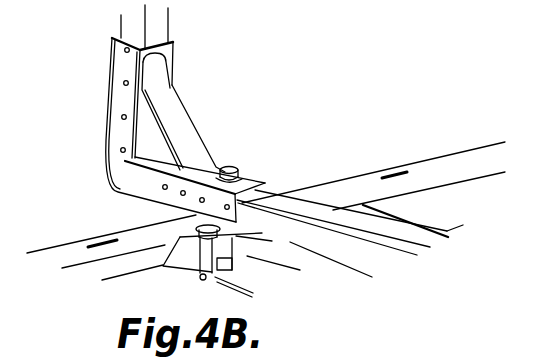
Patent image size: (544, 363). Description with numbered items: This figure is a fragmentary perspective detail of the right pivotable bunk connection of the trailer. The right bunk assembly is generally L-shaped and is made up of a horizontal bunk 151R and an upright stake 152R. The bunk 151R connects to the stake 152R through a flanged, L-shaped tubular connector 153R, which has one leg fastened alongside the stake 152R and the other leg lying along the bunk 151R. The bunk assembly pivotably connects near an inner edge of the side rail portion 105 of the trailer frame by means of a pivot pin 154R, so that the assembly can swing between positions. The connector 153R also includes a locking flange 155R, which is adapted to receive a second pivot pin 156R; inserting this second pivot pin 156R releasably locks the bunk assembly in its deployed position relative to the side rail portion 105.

The side rail portion 105 is at (433, 170).
The horizontal bunk 151R is at (288, 225).
The upright stake 152R is at (163, 22).
The flanged, L-shaped tubular connector 153R is at (110, 173).
The pivot pin 154R is at (233, 167).
The locking flange 155R is at (237, 236).
The second pivot pin 156R is at (182, 236).